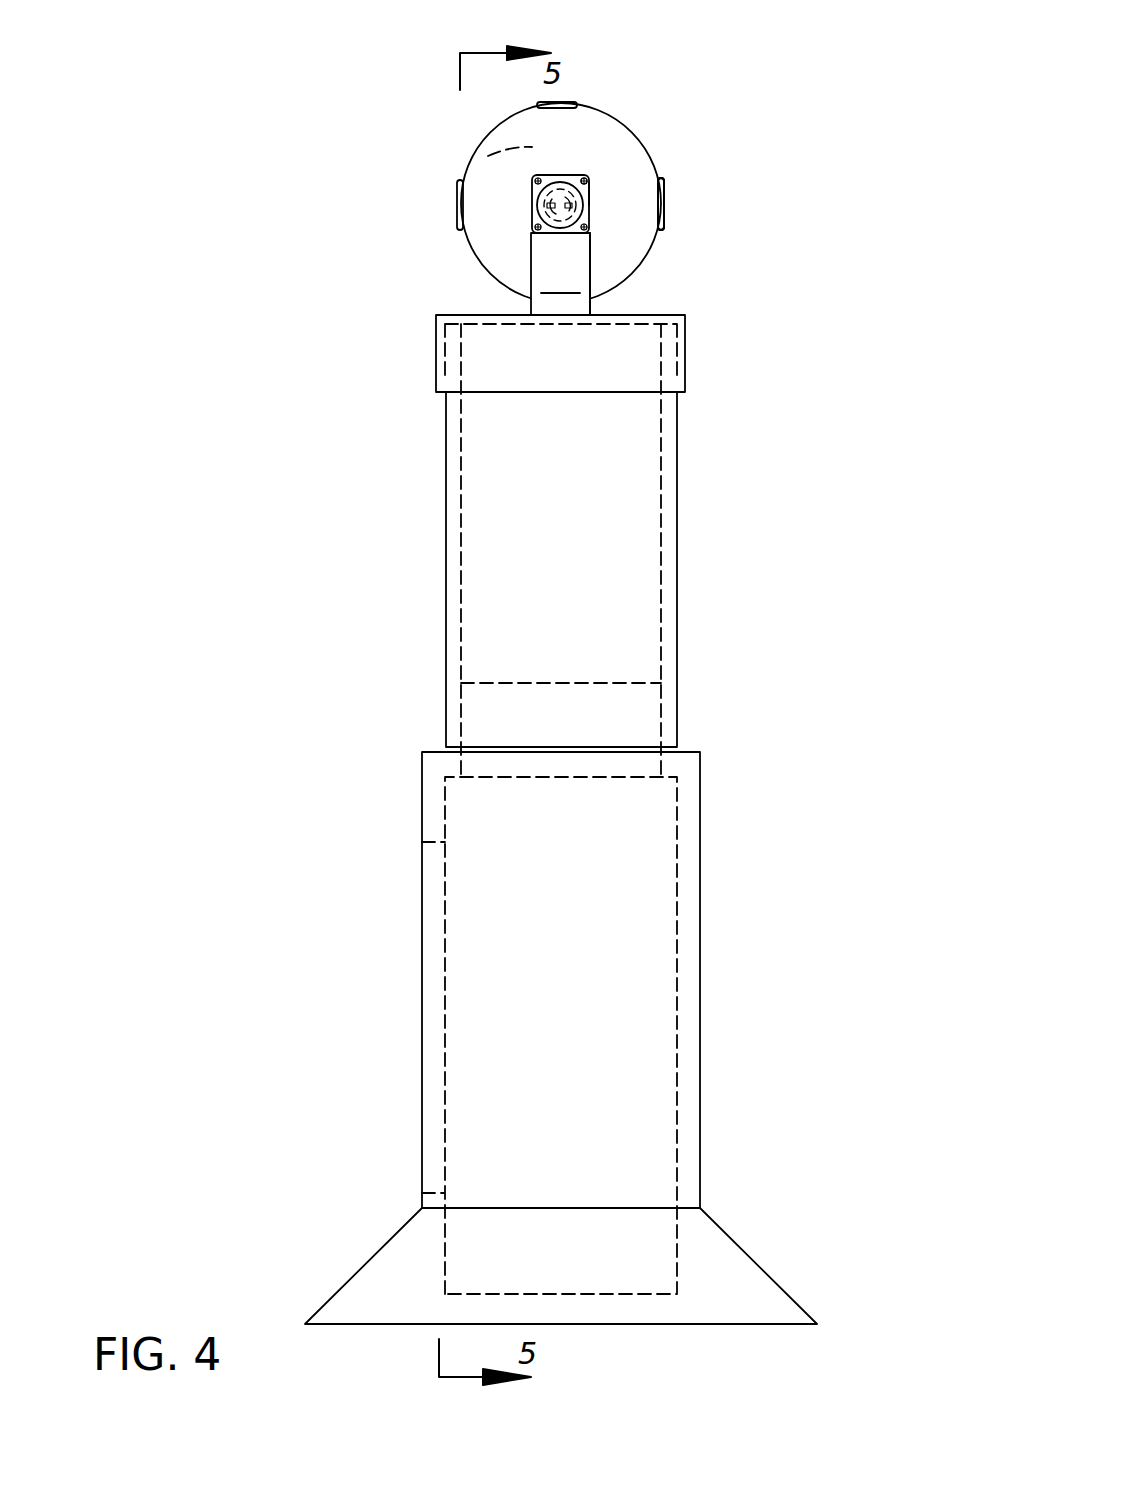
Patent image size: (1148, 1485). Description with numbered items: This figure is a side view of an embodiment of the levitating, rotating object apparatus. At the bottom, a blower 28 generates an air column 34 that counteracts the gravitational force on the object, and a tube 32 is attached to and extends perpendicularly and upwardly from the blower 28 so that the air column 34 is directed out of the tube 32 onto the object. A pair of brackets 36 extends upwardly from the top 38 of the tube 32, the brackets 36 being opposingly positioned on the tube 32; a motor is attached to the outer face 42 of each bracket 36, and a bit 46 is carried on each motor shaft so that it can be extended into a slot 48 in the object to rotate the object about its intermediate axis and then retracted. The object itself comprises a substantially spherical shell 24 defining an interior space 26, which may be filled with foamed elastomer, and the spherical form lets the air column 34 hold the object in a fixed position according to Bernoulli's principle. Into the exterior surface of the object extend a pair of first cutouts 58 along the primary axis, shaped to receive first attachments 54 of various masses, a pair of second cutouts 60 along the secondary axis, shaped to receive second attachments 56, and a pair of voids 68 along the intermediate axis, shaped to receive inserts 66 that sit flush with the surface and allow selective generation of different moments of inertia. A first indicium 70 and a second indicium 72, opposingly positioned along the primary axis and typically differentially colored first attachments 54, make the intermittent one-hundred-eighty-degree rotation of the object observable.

The shell 24 is at (498, 128).
The interior space 26 is at (486, 156).
The blower 28 is at (613, 973).
The tube 32 is at (445, 521).
The air column 34 is at (592, 480).
The bracket 36 is at (591, 262).
The top 38 is at (643, 316).
The outer face 42 is at (560, 274).
The bit 46 is at (558, 207).
The slot 48 is at (532, 205).
The first attachment 54 is at (662, 183).
The second attachment 56 is at (576, 176).
The first cutout 58 is at (662, 222).
The second cutout 60 is at (578, 106).
The insert 66 is at (590, 189).
The void 68 is at (589, 203).
The first indicium 70 is at (459, 193).
The second indicium 72 is at (663, 197).